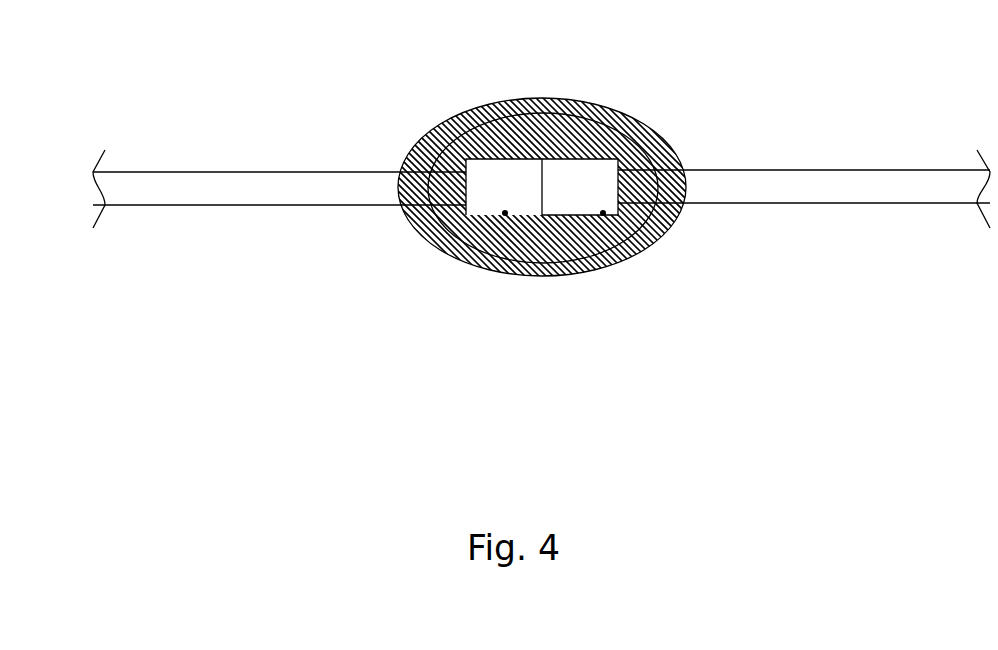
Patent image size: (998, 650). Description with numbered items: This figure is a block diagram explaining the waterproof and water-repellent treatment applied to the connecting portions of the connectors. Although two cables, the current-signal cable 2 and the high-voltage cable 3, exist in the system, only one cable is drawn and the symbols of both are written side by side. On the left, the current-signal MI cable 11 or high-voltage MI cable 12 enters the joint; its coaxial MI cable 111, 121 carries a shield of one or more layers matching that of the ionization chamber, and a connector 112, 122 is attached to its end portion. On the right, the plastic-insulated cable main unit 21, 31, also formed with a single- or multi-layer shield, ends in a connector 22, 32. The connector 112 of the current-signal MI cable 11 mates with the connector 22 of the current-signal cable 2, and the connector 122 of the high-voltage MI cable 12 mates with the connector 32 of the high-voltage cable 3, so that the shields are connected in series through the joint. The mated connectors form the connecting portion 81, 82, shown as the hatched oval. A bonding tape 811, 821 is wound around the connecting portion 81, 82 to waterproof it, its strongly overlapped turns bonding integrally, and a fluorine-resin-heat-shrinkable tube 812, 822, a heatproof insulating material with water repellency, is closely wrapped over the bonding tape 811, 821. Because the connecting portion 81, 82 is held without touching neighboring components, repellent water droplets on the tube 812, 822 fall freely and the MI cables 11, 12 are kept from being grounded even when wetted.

The current-signal cable 2 is at (804, 260).
The high-voltage cable 3 is at (893, 203).
The current-signal MI cable 11 is at (317, 195).
The high-voltage MI cable 12 is at (317, 195).
The cable main unit 21 is at (766, 233).
The cable main unit 31 is at (766, 233).
The connector 22 is at (620, 271).
The connector 32 is at (603, 213).
The connecting portion 81 is at (534, 160).
The connecting portion 82 is at (412, 135).
The MI cable 111 is at (279, 243).
The MI cable 121 is at (235, 207).
The connector 112 is at (477, 271).
The connector 122 is at (505, 213).
The bonding tape 811 is at (543, 157).
The bonding tape 821 is at (585, 142).
The fluorine-resin-heat-shrinkable tube 812 is at (543, 242).
The fluorine-resin-heat-shrinkable tube 822 is at (561, 267).